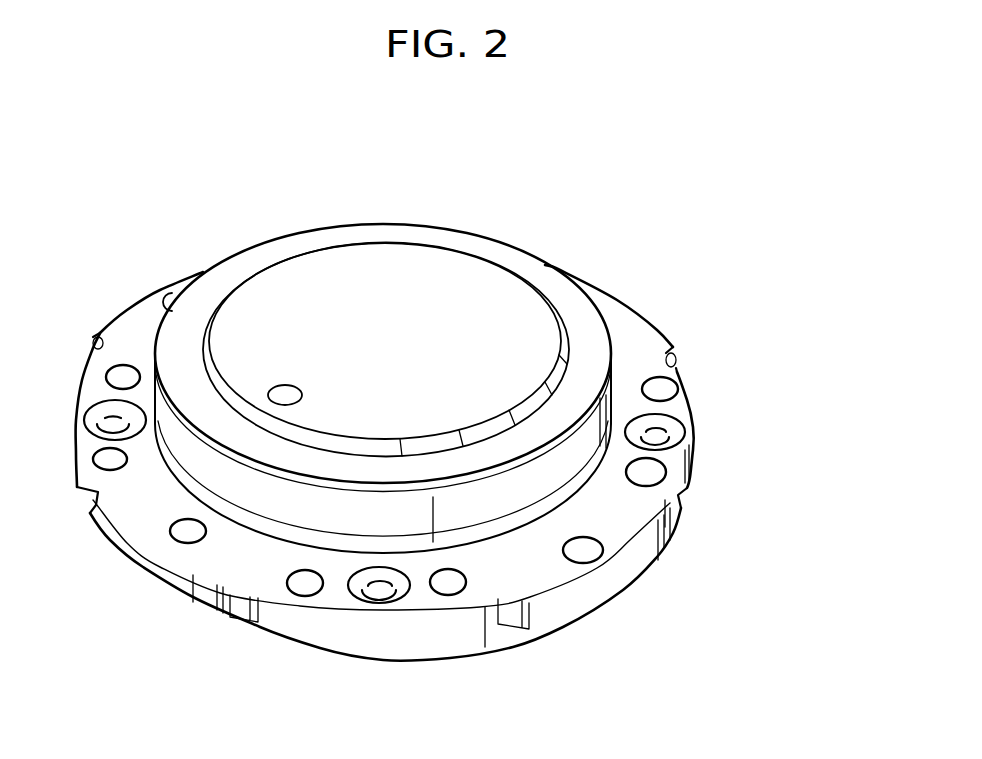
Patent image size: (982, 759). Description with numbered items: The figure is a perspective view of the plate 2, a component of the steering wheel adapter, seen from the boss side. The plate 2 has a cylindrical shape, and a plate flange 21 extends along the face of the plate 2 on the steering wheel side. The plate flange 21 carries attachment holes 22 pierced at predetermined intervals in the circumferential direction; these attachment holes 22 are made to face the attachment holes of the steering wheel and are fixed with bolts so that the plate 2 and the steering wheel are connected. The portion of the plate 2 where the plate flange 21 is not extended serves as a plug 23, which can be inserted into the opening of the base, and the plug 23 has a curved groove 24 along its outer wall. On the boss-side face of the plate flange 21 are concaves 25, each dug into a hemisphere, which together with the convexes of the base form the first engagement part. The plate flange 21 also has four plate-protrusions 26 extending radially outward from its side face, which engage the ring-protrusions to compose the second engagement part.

The plate 2 is at (780, 464).
The plate flange 21 is at (637, 337).
The attachment holes 22 is at (112, 457).
The plug 23 is at (553, 266).
The curved groove 24 is at (573, 470).
The concaves 25 is at (670, 430).
The plate-protrusions 26 is at (137, 318).